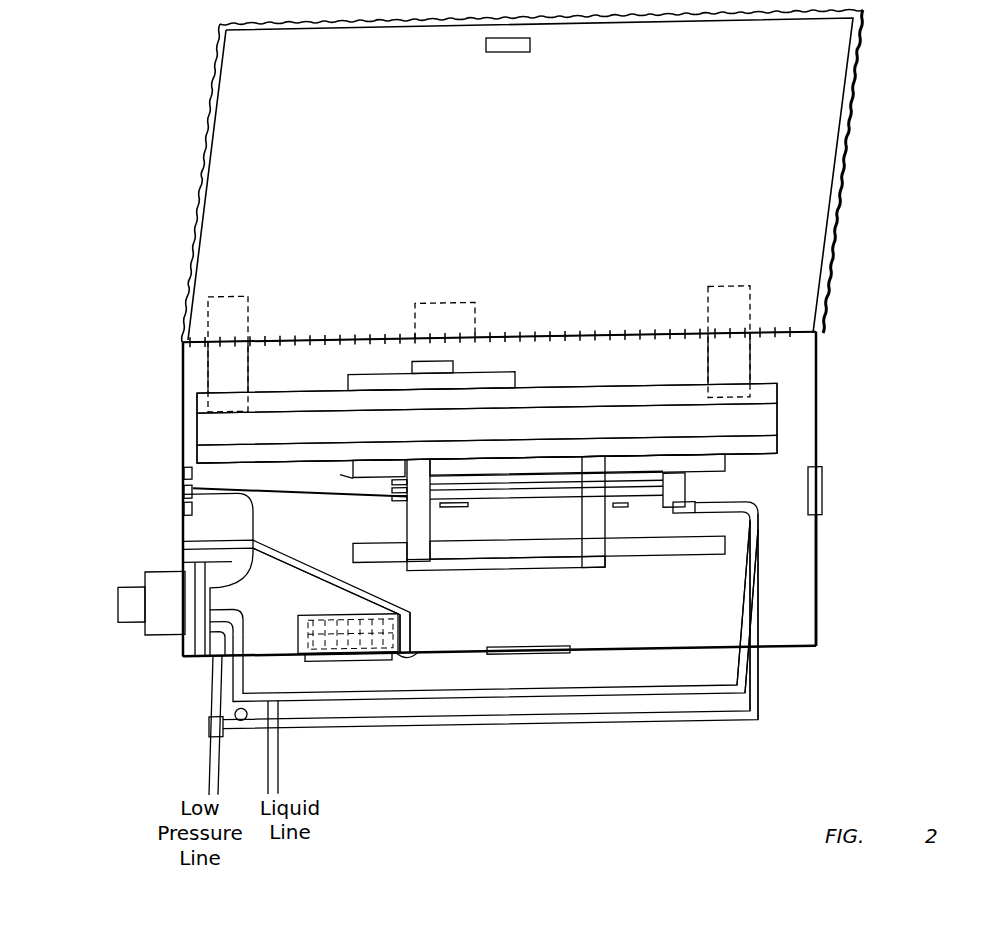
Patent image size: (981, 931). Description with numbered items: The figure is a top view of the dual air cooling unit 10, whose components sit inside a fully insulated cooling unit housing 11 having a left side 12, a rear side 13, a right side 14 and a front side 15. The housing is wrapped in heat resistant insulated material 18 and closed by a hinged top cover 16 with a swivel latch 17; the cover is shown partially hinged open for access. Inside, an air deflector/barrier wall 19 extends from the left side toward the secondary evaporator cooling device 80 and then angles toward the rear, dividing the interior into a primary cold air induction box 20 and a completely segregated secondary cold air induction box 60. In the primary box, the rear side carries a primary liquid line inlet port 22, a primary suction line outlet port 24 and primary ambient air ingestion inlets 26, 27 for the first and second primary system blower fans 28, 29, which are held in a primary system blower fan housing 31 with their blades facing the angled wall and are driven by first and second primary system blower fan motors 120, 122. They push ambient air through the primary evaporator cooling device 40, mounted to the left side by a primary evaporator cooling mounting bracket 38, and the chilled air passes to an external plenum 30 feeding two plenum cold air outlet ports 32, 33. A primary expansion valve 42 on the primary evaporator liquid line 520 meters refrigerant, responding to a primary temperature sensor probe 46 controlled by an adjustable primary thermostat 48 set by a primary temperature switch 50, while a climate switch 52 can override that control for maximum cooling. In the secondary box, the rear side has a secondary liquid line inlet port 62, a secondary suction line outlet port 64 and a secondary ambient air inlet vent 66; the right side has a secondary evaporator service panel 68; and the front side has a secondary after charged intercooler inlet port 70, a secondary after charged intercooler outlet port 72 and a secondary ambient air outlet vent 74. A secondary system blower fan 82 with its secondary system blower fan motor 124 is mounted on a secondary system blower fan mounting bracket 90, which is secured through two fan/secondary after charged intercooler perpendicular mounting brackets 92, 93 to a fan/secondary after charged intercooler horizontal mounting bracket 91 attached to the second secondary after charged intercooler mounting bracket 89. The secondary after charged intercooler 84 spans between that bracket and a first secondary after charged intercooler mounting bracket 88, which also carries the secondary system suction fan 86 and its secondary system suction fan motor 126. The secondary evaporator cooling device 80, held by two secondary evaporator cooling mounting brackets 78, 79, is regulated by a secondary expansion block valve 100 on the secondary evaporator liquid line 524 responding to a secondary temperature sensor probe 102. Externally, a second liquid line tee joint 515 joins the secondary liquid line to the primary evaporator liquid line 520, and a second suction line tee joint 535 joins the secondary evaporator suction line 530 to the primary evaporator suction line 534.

The dual air cooling unit 10 is at (900, 295).
The cooling unit housing 11 is at (815, 355).
The left side 12 is at (183, 432).
The rear side 13 is at (788, 647).
The right side 14 is at (825, 530).
The front side 15 is at (613, 332).
The hinged top cover 16 is at (830, 90).
The swivel latch 17 is at (528, 52).
The heat resistant insulated material 18 is at (850, 133).
The air deflector/barrier wall 19 is at (193, 538).
The primary cold air induction box 20 is at (280, 638).
The primary liquid line inlet port 22 is at (250, 660).
The primary suction line outlet port 24 is at (217, 660).
The primary ambient air ingestion inlet 26 is at (453, 633).
The primary ambient air ingestion inlet 27 is at (410, 652).
The first primary system blower fan 28 is at (426, 671).
The second primary system blower fan 29 is at (392, 658).
The plenum 30 is at (158, 635).
The primary system blower fan housing 31 is at (313, 615).
The plenum cold air outlet port 32 is at (85, 604).
The plenum cold air outlet port 33 is at (118, 602).
The primary evaporator cooling mounting bracket 38 is at (187, 557).
The primary evaporator cooling device 40 is at (202, 653).
The primary expansion valve 42 is at (250, 716).
The primary temperature sensor probe 46 is at (253, 520).
The adjustable primary thermostat 48 is at (182, 508).
The primary temperature switch 50 is at (182, 490).
The climate switch 52 is at (182, 472).
The secondary cold air induction box 60 is at (817, 560).
The secondary liquid line inlet port 62 is at (745, 670).
The secondary suction line outlet port 64 is at (753, 667).
The secondary ambient air inlet vent 66 is at (537, 653).
The secondary evaporator service panel 68 is at (823, 482).
The secondary after charged intercooler inlet port 70 is at (722, 285).
The secondary after charged intercooler outlet port 72 is at (232, 297).
The secondary ambient air outlet vent 74 is at (455, 303).
The secondary evaporator cooling mounting bracket 78 is at (463, 508).
The secondary evaporator cooling mounting bracket 79 is at (620, 503).
The secondary evaporator cooling device 80 is at (353, 480).
The secondary system blower fan 82 is at (410, 565).
The secondary after charged intercooler 84 is at (777, 415).
The secondary system suction fan 86 is at (517, 380).
The first secondary after charged intercooler mounting bracket 88 is at (777, 390).
The second secondary after charged intercooler mounting bracket 89 is at (777, 440).
The secondary system blower fan mounting bracket 90 is at (625, 555).
The fan/secondary after charged intercooler horizontal mounting bracket 91 is at (770, 455).
The fan/secondary after charged intercooler perpendicular mounting bracket 92 is at (418, 530).
The fan/secondary after charged intercooler perpendicular mounting bracket 93 is at (580, 530).
The secondary expansion block valve 100 is at (697, 502).
The secondary temperature sensor probe 102 is at (338, 498).
The first primary system blower fan motor 120 is at (348, 671).
The second primary system blower fan motor 122 is at (348, 671).
The secondary system blower fan motor 124 is at (545, 568).
The secondary system suction fan motor 126 is at (453, 367).
The second liquid line tee joint 515 is at (278, 712).
The primary evaporator liquid line 520 is at (282, 740).
The secondary evaporator liquid line 524 is at (605, 687).
The secondary evaporator suction line 530 is at (520, 728).
The primary evaporator suction line 534 is at (212, 750).
The second suction line tee joint 535 is at (213, 720).